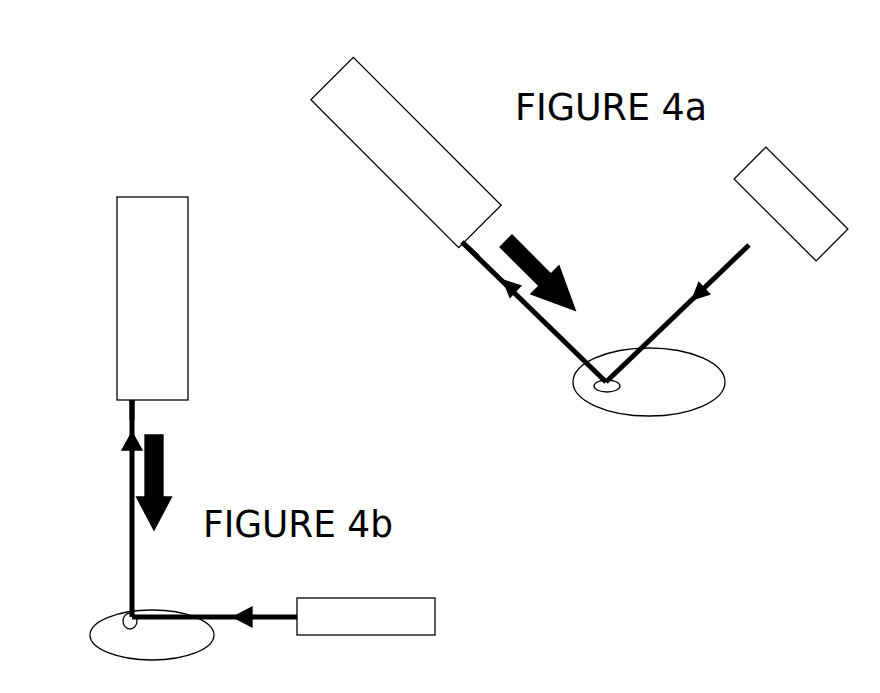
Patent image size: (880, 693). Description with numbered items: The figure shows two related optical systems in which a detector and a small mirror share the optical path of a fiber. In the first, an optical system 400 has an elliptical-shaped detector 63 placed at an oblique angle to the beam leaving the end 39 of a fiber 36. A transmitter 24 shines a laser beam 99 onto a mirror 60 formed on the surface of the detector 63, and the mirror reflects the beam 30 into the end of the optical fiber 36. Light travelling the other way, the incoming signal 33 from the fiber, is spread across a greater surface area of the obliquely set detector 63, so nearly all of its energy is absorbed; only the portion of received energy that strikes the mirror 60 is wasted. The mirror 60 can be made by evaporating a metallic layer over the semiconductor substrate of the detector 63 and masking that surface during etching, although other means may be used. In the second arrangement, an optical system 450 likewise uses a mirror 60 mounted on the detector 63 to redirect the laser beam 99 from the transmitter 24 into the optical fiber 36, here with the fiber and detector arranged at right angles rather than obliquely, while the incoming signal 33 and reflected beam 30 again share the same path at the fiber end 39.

In FIG. 4a, the optical system 400 is at (522, 54).
In FIG. 4b, the optical system 450 is at (317, 255).
In FIG. 4a, the optical fiber 36 is at (325, 83).
In FIG. 4b, the optical fiber 36 is at (140, 195).
In FIG. 4a, the end of the fiber 39 is at (493, 220).
In FIG. 4b, the end of the fiber 39 is at (173, 402).
In FIG. 4a, the beam 30 is at (487, 270).
In FIG. 4b, the beam 30 is at (128, 468).
In FIG. 4a, the incoming signal 33 is at (568, 283).
In FIG. 4b, the incoming signal 33 is at (163, 513).
In FIG. 4a, the laser beam 99 is at (737, 245).
In FIG. 4b, the laser beam 99 is at (278, 608).
In FIG. 4a, the transmitter 24 is at (797, 167).
In FIG. 4b, the transmitter 24 is at (407, 598).
In FIG. 4a, the detector 63 is at (582, 375).
In FIG. 4b, the detector 63 is at (93, 635).
In FIG. 4a, the mirror 60 is at (600, 387).
In FIG. 4b, the mirror 60 is at (130, 613).